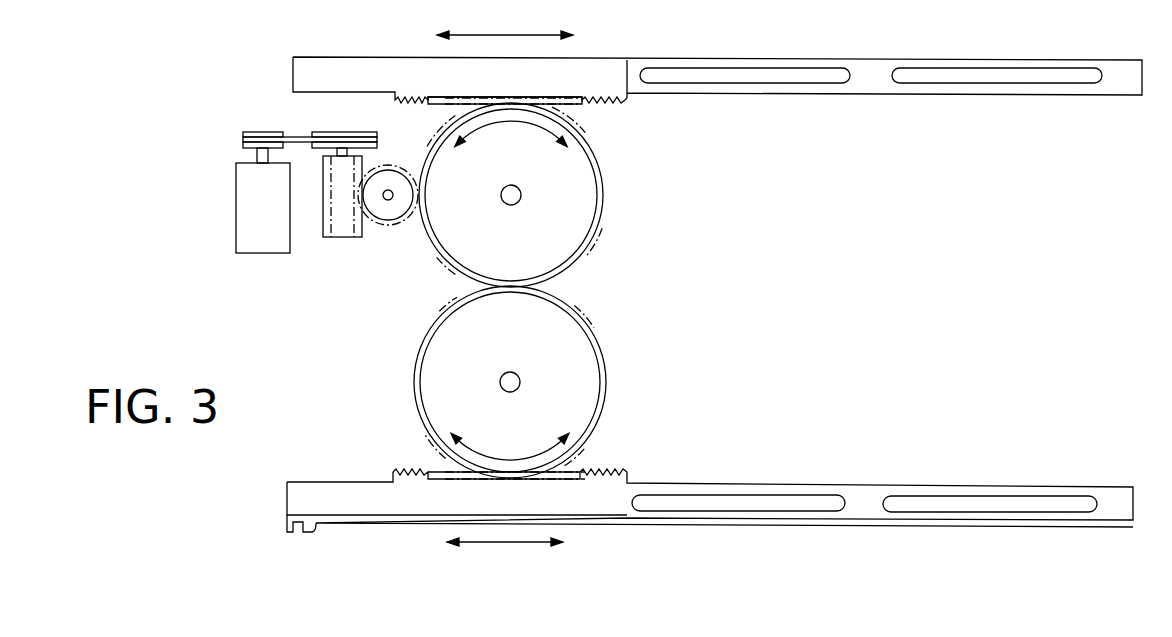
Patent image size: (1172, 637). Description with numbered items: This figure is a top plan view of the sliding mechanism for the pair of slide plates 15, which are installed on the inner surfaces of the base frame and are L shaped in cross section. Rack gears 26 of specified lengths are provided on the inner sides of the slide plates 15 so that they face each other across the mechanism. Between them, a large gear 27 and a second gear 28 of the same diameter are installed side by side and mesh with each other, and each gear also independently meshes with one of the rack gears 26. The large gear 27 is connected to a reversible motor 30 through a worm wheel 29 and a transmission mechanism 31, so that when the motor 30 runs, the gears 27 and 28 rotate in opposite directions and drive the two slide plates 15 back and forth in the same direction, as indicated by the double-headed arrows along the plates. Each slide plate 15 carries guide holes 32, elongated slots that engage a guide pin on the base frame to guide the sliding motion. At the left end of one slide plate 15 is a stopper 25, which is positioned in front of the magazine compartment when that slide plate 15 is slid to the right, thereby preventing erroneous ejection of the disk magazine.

The slide plate 15 is at (714, 287).
The stopper 25 is at (308, 523).
The rack gear 26 is at (605, 72).
The large gear 27 is at (607, 190).
The gear 28 is at (607, 340).
The worm wheel 29 is at (385, 228).
The reversible motor 30 is at (245, 224).
The transmission mechanism 31 is at (298, 131).
The guide hole 32 is at (767, 77).